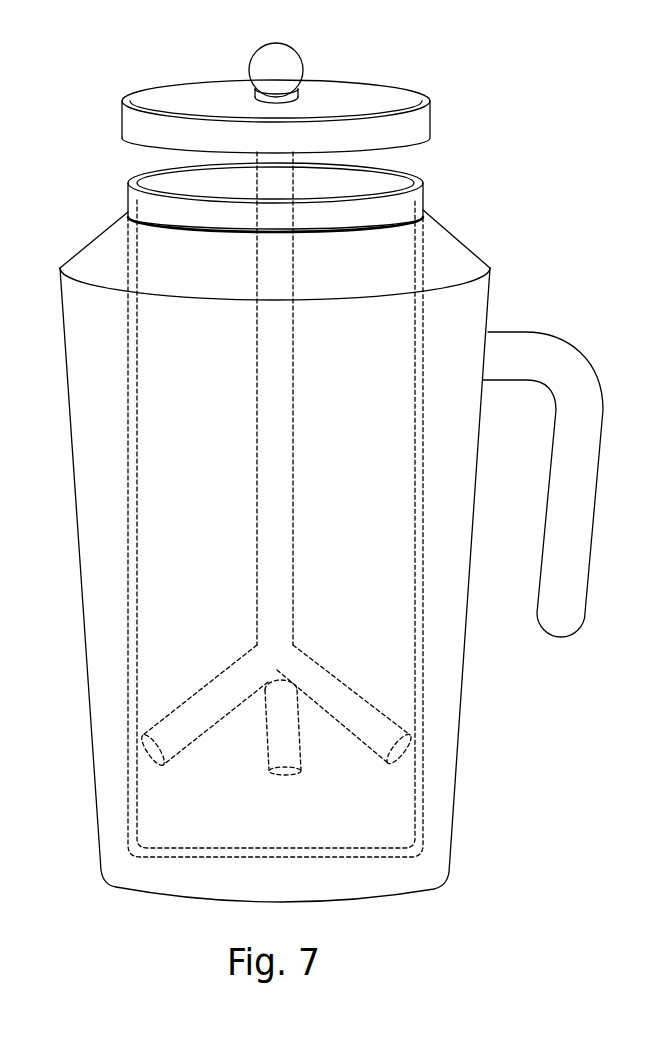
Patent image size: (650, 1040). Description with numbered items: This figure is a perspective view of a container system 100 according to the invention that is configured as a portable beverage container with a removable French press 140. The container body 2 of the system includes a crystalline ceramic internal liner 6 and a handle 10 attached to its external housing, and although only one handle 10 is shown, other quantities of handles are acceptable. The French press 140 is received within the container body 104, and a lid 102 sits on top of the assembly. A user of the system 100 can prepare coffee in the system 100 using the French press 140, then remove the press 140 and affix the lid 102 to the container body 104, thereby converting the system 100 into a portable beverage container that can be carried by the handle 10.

The container system 100 is at (273, 409).
The lid 102 is at (423, 121).
The French press 140 is at (286, 469).
The container body 2 is at (342, 529).
The crystalline ceramic internal liner 6 is at (420, 193).
The container body 104 is at (460, 686).
The handle 10 is at (565, 362).